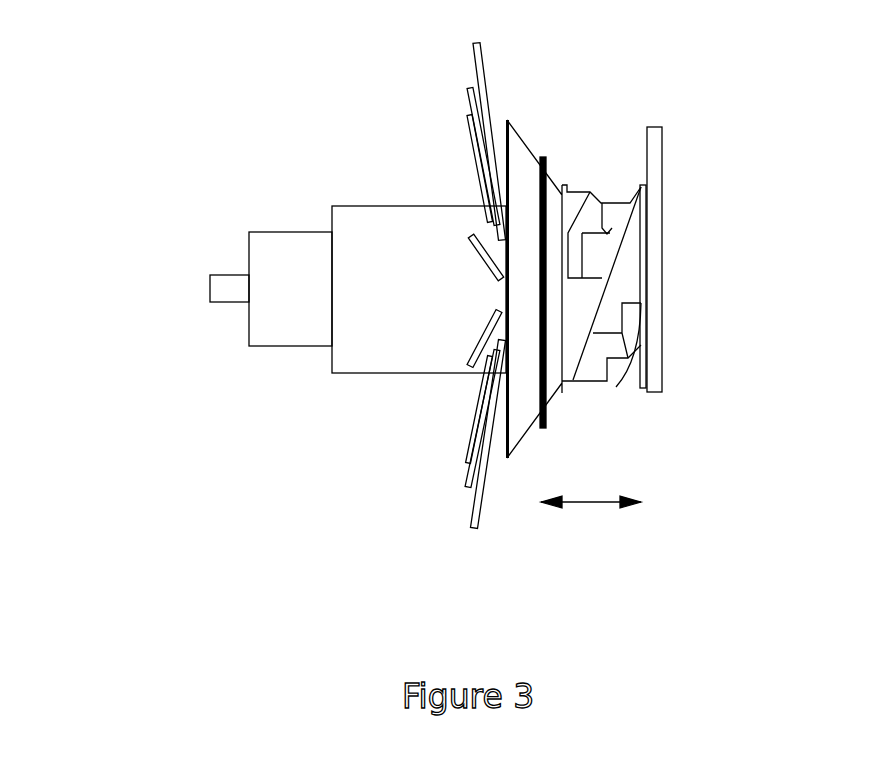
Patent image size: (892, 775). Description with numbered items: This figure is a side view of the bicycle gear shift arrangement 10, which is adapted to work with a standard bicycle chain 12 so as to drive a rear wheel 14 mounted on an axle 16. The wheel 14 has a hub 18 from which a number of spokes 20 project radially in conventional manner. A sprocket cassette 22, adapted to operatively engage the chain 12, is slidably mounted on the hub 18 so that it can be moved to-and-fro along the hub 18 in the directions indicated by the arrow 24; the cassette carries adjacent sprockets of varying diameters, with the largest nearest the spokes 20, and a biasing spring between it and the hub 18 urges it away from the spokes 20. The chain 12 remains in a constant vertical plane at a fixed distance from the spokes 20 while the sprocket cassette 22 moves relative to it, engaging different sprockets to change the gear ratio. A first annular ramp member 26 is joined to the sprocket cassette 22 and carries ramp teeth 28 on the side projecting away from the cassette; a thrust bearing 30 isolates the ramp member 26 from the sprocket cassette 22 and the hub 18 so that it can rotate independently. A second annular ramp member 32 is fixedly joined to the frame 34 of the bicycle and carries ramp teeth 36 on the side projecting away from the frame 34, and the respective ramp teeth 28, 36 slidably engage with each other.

The bicycle gear shift arrangement 10 is at (83, 121).
The bicycle chain 12 is at (547, 162).
The rear wheel 14 is at (477, 157).
The axle 16 is at (265, 260).
The hub 18 is at (367, 352).
The spokes 20 is at (477, 440).
The sprocket cassette 22 is at (516, 433).
The arrow 24 is at (592, 505).
The first annular ramp member 26 is at (616, 388).
The ramp teeth 28 is at (583, 303).
The thrust bearing 30 is at (603, 233).
The second annular ramp member 32 is at (625, 250).
The frame 34 is at (652, 149).
The ramp teeth 36 is at (618, 286).